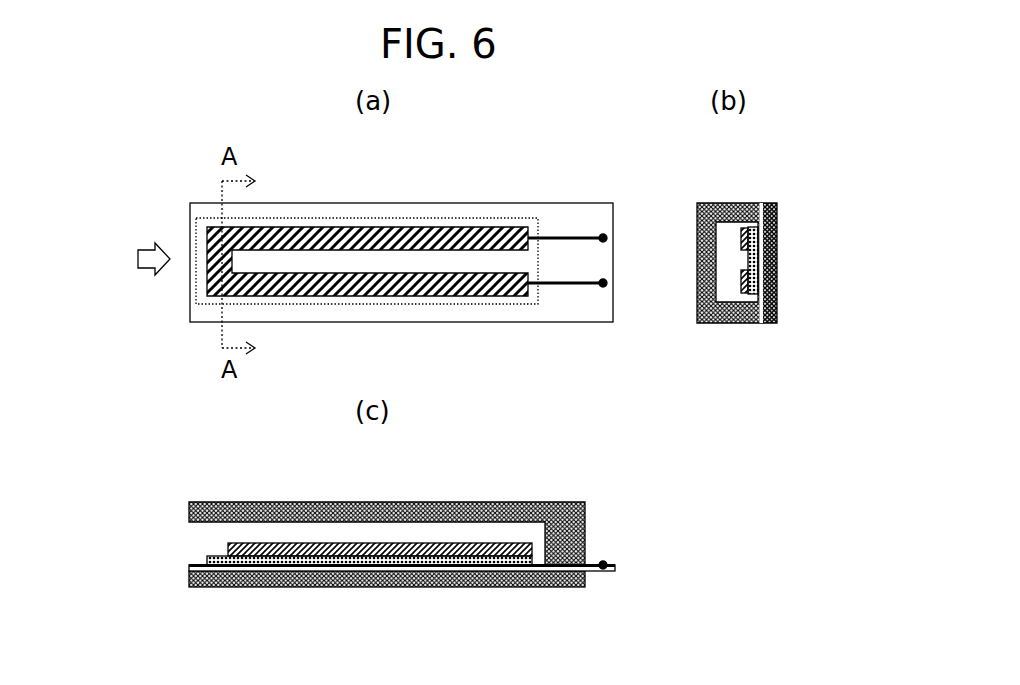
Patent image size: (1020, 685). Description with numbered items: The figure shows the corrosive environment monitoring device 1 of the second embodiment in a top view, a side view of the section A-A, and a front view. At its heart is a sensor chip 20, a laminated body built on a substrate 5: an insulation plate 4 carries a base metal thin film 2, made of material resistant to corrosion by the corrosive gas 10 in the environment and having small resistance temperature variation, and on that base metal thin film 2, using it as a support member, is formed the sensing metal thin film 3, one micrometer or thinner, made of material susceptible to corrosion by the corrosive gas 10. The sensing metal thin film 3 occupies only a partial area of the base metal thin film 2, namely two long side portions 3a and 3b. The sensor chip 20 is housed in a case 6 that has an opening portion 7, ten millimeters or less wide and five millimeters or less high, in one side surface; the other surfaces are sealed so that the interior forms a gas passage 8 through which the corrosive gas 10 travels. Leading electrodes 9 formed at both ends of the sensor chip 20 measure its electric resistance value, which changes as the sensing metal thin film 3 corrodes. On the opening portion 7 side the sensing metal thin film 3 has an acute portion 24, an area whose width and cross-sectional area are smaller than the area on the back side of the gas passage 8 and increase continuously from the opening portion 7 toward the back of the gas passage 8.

The corrosive environment monitoring device 1 is at (568, 200).
The base metal thin film 2 is at (755, 236).
The sensing metal thin film 3 is at (745, 236).
The long side portion 3a is at (355, 235).
The long side portion 3b is at (350, 292).
The insulation plate 4 is at (770, 225).
The substrate 5 is at (500, 312).
The case 6 is at (699, 296).
The opening portion 7 is at (190, 240).
The gas passage 8 is at (532, 232).
The leading electrodes 9 is at (567, 285).
The corrosive gas 10 is at (141, 250).
The sensor chip 20 is at (156, 544).
The acute portion 24 is at (227, 280).